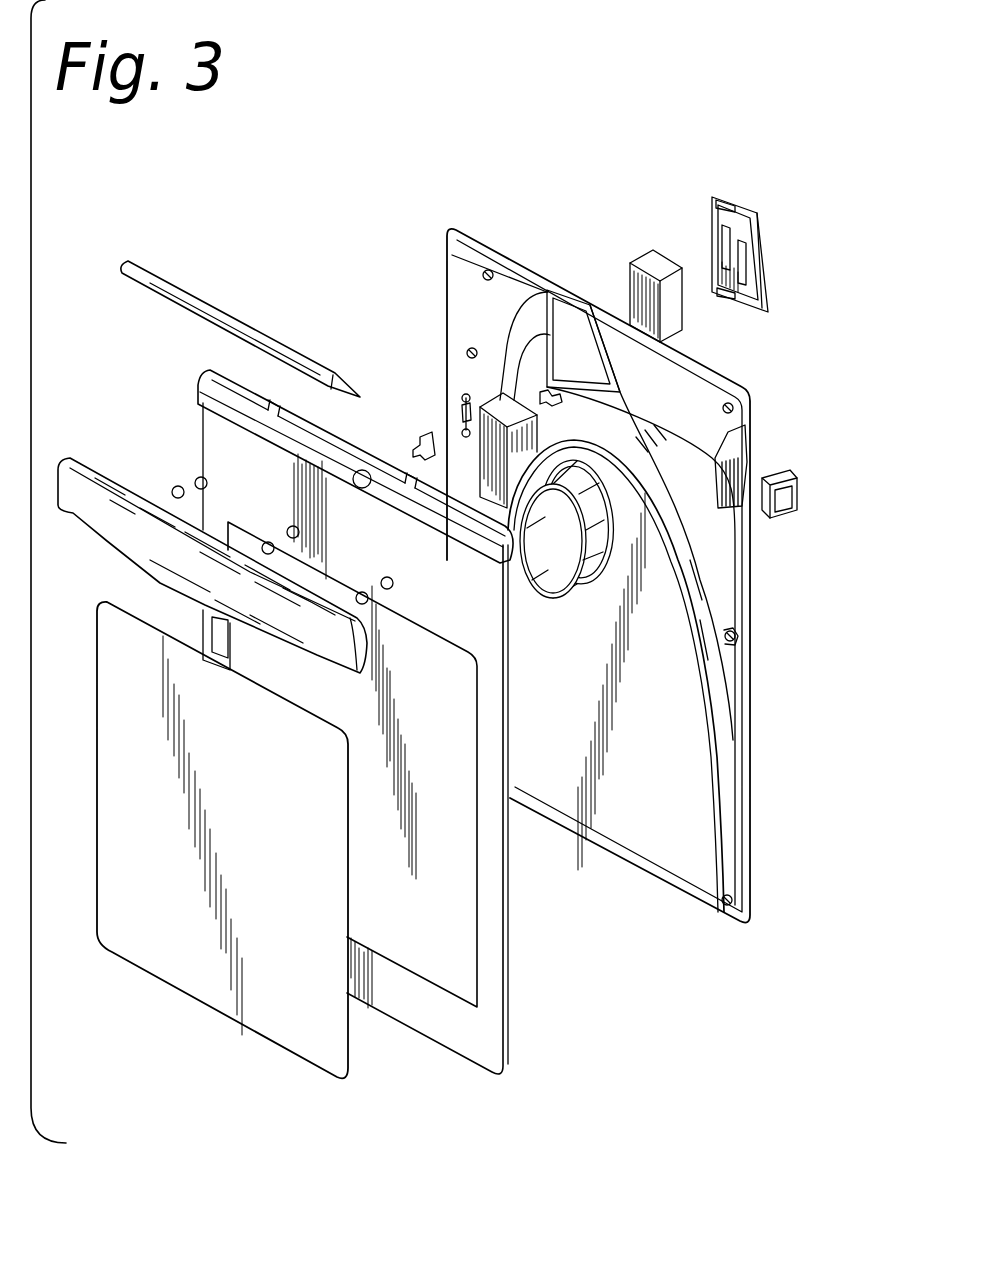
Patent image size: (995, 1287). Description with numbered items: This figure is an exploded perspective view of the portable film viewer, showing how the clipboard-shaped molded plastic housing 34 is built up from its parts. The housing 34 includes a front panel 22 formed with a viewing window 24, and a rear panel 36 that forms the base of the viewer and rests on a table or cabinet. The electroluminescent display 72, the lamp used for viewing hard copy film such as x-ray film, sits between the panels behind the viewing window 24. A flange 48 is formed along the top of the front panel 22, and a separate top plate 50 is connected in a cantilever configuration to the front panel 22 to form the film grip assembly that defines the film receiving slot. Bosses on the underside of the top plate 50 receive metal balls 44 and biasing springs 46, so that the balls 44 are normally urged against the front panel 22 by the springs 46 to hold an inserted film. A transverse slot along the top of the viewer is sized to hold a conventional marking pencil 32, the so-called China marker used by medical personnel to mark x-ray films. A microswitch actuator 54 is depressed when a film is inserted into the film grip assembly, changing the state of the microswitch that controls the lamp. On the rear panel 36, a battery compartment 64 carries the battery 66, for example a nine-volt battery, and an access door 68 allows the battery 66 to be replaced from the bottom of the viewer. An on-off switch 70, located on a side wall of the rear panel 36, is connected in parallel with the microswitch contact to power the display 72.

The front panel 22 is at (490, 1055).
The viewing window 24 is at (447, 762).
The marking pencil 32 is at (183, 291).
The molded plastic housing 34 is at (666, 1106).
The rear panel 36 is at (754, 562).
The metal balls 44 is at (173, 487).
The biasing springs 46 is at (196, 478).
The flange 48 is at (198, 377).
The top plate 50 is at (112, 545).
The microswitch actuator 54 is at (366, 470).
The battery compartment 64 is at (591, 264).
The battery 66 is at (675, 320).
The access door 68 is at (780, 233).
The on-off switch 70 is at (782, 476).
The electroluminescent display 72 is at (122, 864).